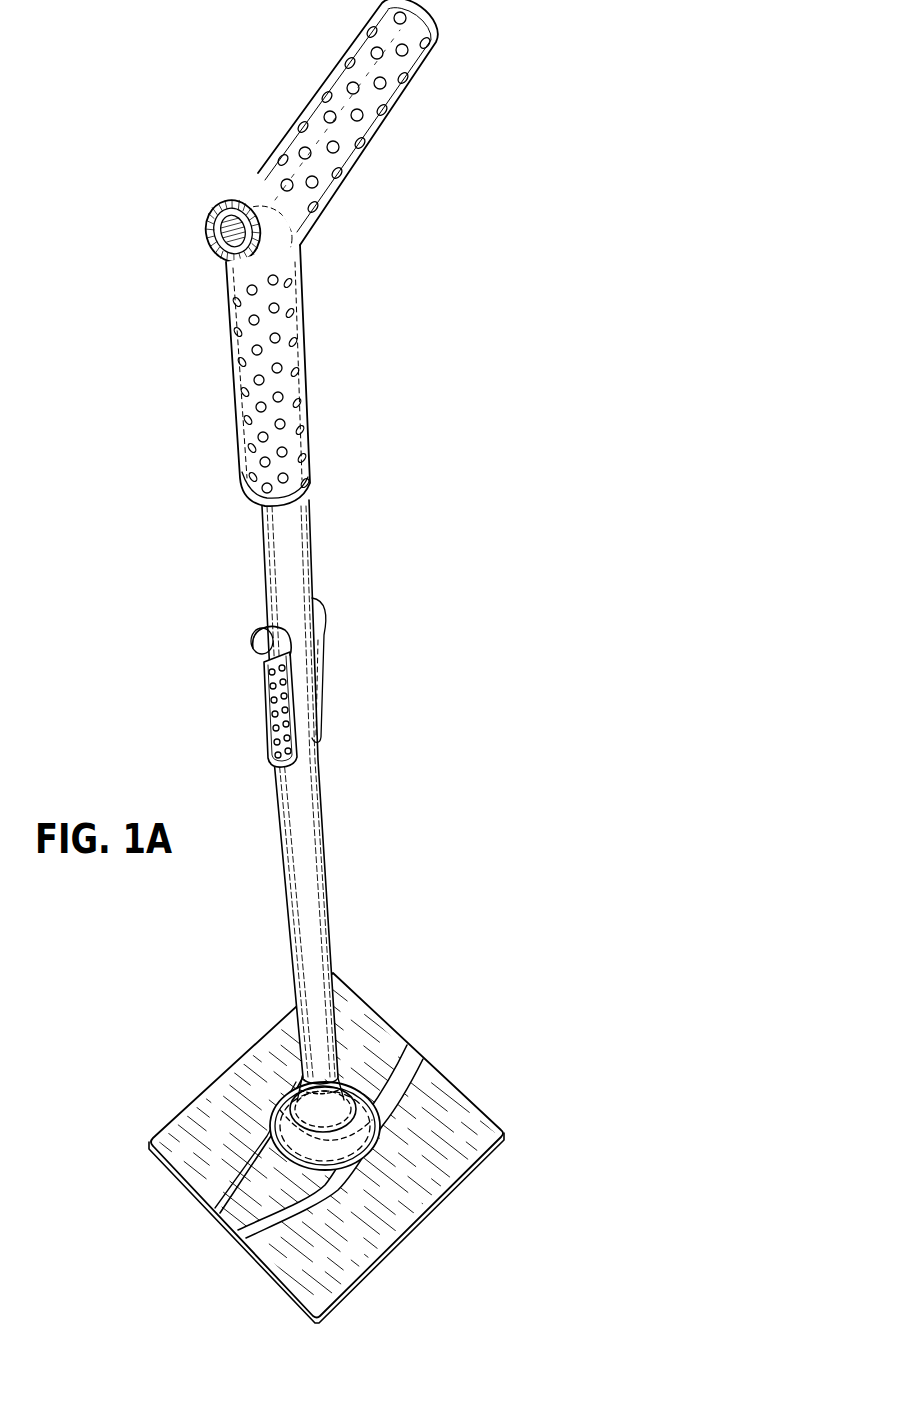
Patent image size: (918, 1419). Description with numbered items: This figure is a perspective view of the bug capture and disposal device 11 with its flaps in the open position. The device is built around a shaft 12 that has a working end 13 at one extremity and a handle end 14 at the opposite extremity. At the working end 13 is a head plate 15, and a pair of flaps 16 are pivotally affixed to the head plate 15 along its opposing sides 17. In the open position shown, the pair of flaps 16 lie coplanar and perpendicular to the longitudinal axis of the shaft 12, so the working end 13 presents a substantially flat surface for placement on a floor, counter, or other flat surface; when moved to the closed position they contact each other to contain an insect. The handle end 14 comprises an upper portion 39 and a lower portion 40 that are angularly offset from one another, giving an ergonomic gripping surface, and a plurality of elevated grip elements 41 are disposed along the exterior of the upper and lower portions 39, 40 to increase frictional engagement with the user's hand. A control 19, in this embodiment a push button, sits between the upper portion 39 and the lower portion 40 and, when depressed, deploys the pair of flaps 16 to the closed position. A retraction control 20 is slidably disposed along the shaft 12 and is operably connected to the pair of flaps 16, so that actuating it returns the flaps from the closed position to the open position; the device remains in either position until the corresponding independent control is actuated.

The bug capture and disposal device 11 is at (562, 200).
The shaft 12 is at (265, 573).
The working end 13 is at (380, 1040).
The handle end 14 is at (322, 98).
The head plate 15 is at (247, 1197).
The pair of flaps 16 is at (235, 1066).
The opposing sides 17 is at (425, 1110).
The control 19 is at (242, 228).
The retraction control 20 is at (265, 704).
The upper portion 39 is at (404, 100).
The lower portion 40 is at (305, 358).
The plurality of elevated grip elements 41 is at (252, 320).